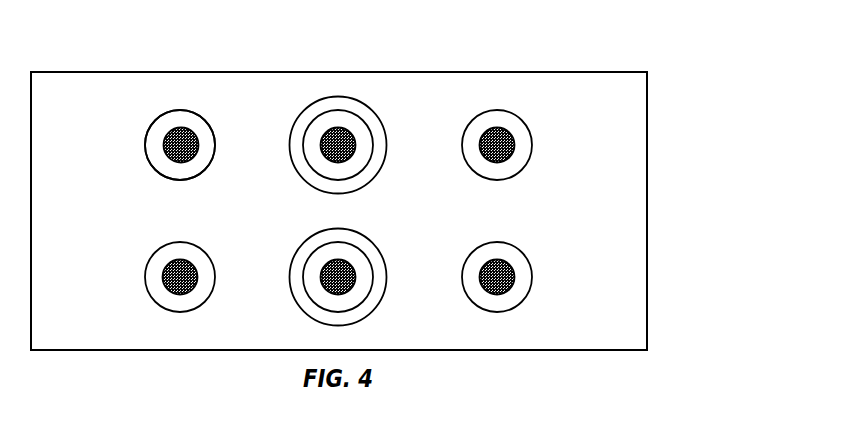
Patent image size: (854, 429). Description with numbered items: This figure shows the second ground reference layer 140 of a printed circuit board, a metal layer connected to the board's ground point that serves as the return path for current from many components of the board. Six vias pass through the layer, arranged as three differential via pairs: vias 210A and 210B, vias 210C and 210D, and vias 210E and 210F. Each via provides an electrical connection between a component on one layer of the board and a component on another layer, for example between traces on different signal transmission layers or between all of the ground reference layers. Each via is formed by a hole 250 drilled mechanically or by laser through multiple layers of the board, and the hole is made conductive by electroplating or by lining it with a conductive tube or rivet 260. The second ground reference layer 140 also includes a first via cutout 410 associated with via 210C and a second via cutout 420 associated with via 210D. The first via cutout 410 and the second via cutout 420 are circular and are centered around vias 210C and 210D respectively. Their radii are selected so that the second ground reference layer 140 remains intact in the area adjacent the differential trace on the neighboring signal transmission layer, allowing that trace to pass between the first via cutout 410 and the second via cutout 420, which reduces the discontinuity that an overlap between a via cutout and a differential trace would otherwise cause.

The second ground reference layer 140 is at (669, 192).
The via 210A is at (180, 110).
The via 210B is at (180, 242).
The via 210C is at (358, 113).
The via 210D is at (358, 245).
The via 210E is at (498, 110).
The via 210F is at (498, 242).
The hole 250 is at (199, 143).
The conductive tube or rivet 260 is at (213, 156).
The first via cutout 410 is at (385, 167).
The second via cutout 420 is at (385, 299).